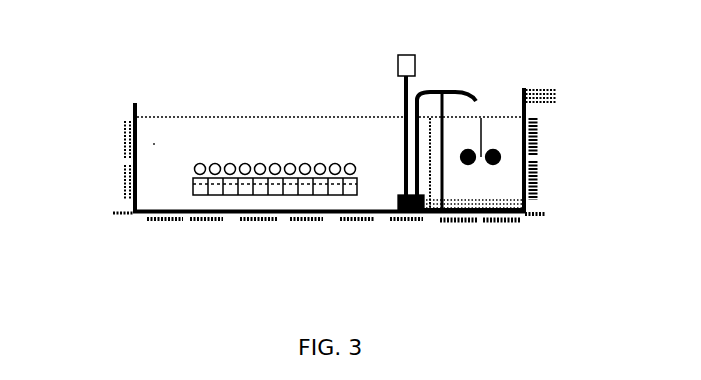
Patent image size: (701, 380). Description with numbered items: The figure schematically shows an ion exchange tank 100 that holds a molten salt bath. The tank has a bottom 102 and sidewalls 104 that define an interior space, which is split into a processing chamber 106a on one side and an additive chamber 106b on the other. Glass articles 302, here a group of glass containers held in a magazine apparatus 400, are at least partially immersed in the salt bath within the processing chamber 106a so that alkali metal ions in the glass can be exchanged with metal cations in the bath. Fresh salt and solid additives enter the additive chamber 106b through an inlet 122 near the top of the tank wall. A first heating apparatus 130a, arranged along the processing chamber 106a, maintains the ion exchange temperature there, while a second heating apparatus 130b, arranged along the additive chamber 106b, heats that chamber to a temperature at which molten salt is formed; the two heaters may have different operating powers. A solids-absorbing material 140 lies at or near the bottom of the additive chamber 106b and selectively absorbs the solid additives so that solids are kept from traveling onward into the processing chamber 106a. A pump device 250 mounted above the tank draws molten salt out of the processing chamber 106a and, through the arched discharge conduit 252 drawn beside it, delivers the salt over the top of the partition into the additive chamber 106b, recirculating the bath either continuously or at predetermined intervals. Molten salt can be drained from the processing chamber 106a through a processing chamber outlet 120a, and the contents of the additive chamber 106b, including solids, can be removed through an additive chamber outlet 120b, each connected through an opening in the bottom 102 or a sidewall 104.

The ion exchange tank 100 is at (130, 48).
The bottom 102 is at (140, 217).
The sidewalls 104 is at (133, 108).
The processing chamber 106a is at (274, 97).
The additive chamber 106b is at (502, 68).
The processing chamber outlet 120a is at (117, 212).
The additive chamber outlet 120b is at (545, 213).
The inlet 122 is at (527, 88).
The first heating apparatus 130a is at (425, 233).
The second heating apparatus 130b is at (550, 128).
The solids-absorbing material 140 is at (440, 216).
The pump device 250 is at (397, 64).
The inlet pipe 252 is at (440, 92).
The glass article 302 is at (360, 170).
The magazine apparatus 400 is at (170, 177).